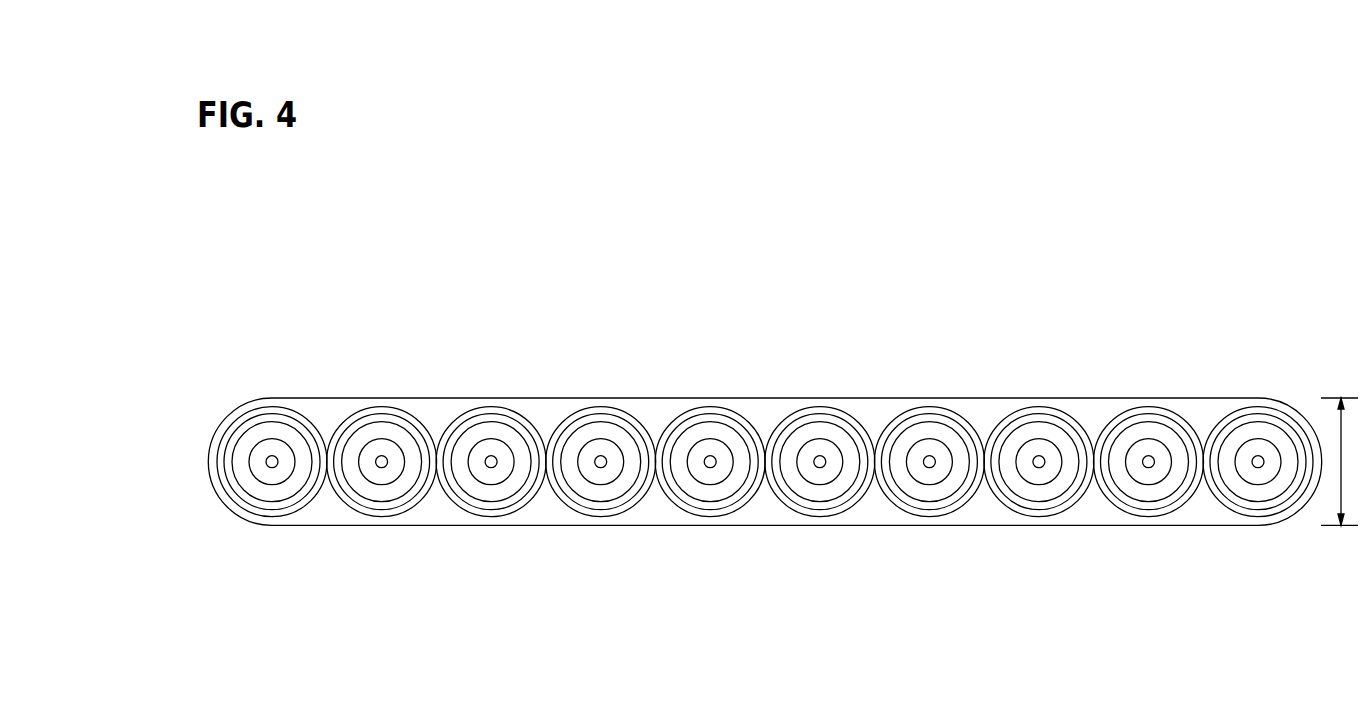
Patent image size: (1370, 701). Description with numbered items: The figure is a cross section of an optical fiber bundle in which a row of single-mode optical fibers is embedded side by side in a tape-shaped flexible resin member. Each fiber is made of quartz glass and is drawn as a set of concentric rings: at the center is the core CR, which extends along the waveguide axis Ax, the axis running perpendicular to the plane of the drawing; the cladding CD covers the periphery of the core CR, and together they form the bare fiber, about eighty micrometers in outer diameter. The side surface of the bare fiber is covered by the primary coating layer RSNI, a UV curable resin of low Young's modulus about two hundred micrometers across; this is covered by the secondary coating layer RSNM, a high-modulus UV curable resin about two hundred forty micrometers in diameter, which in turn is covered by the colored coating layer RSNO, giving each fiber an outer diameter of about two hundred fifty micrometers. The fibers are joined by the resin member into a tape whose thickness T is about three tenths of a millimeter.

The primary coating layer RSNI is at (1113, 430).
The secondary coating layer RSNM is at (1167, 410).
The colored coating layer RSNO is at (1192, 432).
The waveguide axis Ax is at (1259, 456).
The core CR is at (1150, 468).
The cladding CD is at (1163, 472).
The thickness T is at (1342, 461).